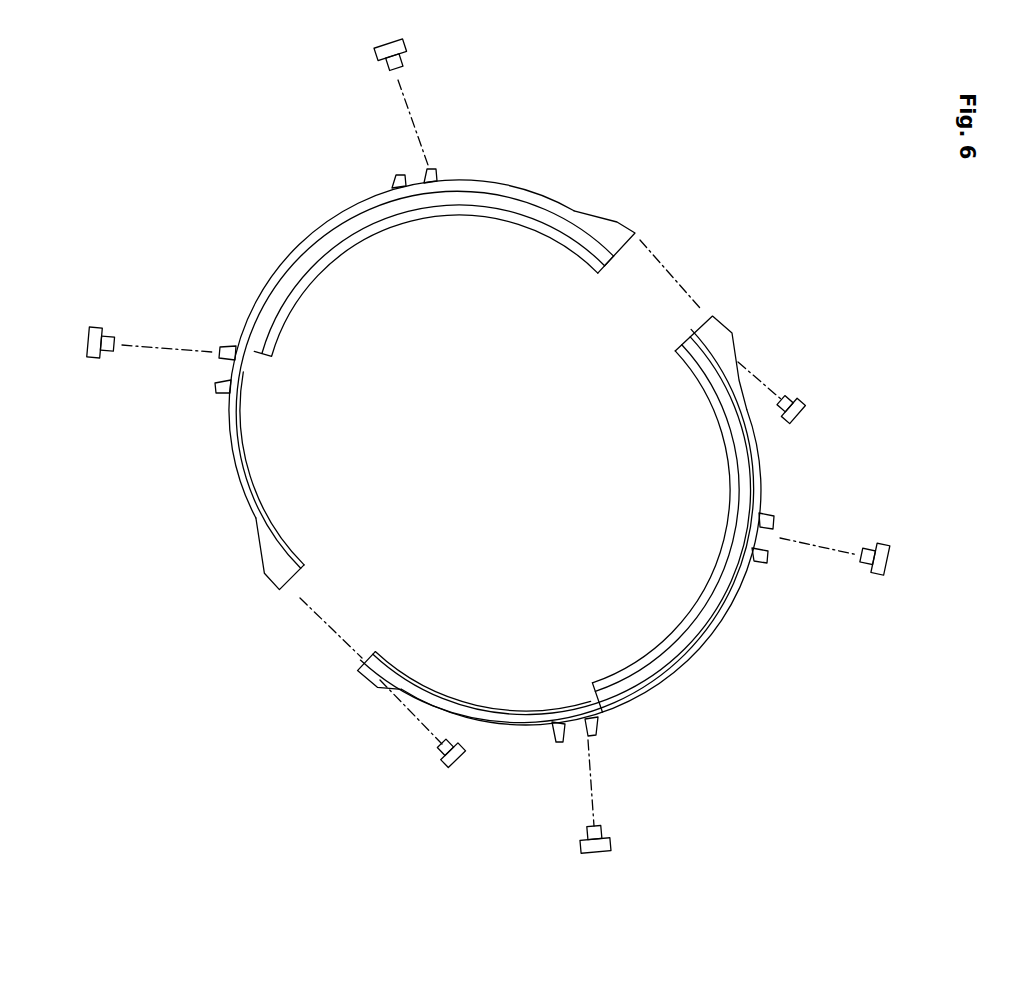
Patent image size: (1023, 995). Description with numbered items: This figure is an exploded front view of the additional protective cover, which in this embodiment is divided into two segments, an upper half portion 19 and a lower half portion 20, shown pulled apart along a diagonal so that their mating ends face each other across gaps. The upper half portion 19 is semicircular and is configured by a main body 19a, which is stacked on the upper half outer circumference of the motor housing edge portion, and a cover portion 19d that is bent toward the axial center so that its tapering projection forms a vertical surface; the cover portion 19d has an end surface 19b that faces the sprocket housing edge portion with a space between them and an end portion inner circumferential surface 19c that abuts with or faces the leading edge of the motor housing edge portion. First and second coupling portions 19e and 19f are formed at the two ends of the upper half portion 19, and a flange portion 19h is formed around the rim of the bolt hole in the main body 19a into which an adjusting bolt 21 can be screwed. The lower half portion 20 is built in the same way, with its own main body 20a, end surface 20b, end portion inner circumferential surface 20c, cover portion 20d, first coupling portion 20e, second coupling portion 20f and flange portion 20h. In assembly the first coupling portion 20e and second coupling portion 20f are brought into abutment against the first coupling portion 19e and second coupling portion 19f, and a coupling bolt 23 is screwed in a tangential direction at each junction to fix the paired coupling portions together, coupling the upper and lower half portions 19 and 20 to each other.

The upper half portion 19 is at (435, 357).
The main body 19a is at (505, 180).
The end surface 19b is at (567, 252).
The end portion inner circumferential surface 19c is at (325, 262).
The cover portion 19d is at (460, 200).
The first coupling portion 19e is at (630, 228).
The second coupling portion 19f is at (268, 580).
The flange portion 19h is at (434, 170).
The lower half portion 20 is at (581, 505).
The main body 20a is at (742, 620).
The end surface 20b is at (630, 668).
The end portion inner circumferential surface 20c is at (680, 630).
The cover portion 20d is at (727, 570).
The first coupling portion 20e is at (712, 330).
The second coupling portion 20f is at (365, 672).
The flange portion 20h is at (772, 516).
The adjusting bolt 21 is at (610, 832).
The coupling bolt 23 is at (800, 406).